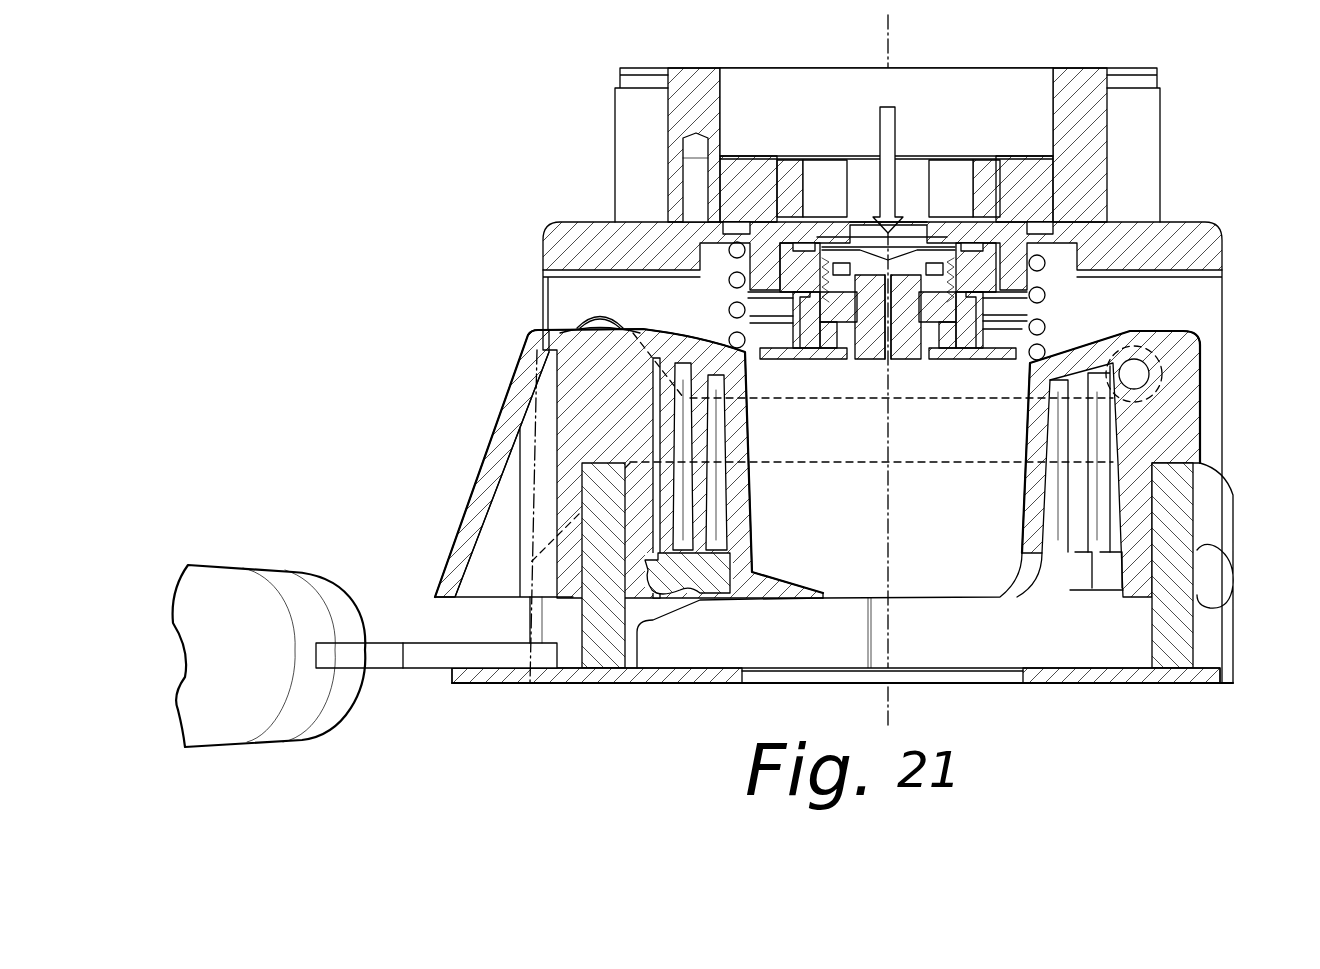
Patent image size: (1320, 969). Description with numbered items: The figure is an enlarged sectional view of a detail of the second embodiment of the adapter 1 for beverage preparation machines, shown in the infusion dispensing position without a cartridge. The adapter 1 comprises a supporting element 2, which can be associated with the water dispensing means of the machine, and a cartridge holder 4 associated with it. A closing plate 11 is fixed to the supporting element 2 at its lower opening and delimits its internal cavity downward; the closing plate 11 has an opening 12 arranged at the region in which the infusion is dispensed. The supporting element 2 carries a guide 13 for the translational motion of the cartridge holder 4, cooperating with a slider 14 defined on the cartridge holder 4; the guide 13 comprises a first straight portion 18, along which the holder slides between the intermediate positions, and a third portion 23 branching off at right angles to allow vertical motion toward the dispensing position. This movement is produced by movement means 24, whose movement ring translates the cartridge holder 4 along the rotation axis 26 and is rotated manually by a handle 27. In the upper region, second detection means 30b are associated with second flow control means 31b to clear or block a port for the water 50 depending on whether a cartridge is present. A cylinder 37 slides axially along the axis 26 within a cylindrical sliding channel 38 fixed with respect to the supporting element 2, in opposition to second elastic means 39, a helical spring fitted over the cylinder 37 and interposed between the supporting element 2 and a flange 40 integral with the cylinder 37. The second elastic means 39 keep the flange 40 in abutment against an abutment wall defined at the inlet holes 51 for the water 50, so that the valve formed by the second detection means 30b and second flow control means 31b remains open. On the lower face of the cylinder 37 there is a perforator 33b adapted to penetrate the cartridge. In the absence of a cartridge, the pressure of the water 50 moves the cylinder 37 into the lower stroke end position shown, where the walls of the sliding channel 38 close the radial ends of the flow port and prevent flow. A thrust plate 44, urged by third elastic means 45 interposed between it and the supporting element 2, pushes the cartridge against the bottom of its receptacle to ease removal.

The adapter 1 is at (330, 188).
The supporting element 2 is at (535, 217).
The cartridge holder 4 is at (472, 453).
The closing plate 11 is at (630, 700).
The opening 12 is at (1023, 673).
The guide 13 is at (828, 474).
The slider 14 is at (1168, 390).
The first straight portion 18 is at (940, 400).
The third portion 23 is at (1180, 353).
The movement means 24 is at (428, 717).
The rotation axis 26 is at (890, 31).
The handle 27 is at (220, 612).
The second detection means 30b is at (1063, 310).
The second flow control means 31b is at (912, 215).
The perforator 33b is at (898, 375).
The cylinder 37 is at (868, 312).
The cylindrical sliding channel 38 is at (907, 312).
The second elastic means 39 is at (808, 266).
The flange 40 is at (938, 247).
The thrust plate 44 is at (720, 352).
The third elastic means 45 is at (722, 308).
The water 50 is at (886, 145).
The inlet holes 51 is at (863, 223).